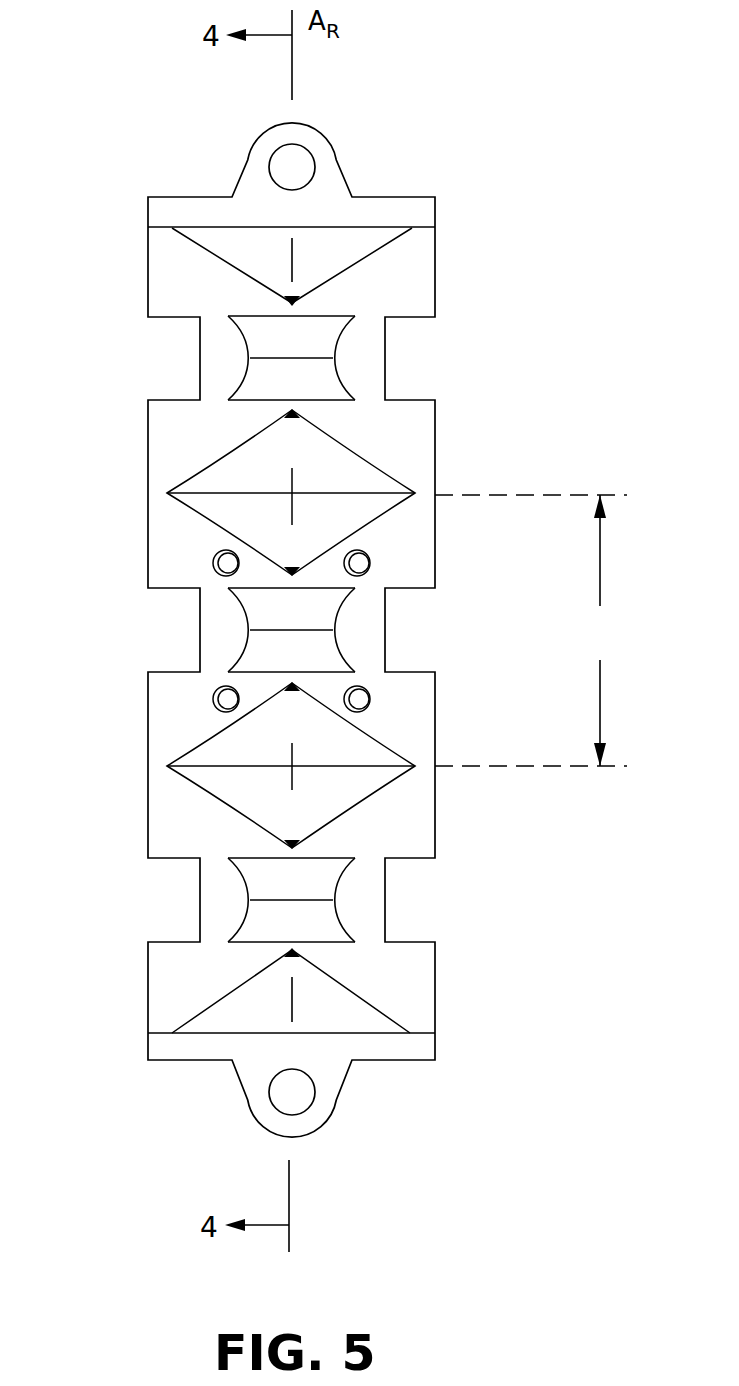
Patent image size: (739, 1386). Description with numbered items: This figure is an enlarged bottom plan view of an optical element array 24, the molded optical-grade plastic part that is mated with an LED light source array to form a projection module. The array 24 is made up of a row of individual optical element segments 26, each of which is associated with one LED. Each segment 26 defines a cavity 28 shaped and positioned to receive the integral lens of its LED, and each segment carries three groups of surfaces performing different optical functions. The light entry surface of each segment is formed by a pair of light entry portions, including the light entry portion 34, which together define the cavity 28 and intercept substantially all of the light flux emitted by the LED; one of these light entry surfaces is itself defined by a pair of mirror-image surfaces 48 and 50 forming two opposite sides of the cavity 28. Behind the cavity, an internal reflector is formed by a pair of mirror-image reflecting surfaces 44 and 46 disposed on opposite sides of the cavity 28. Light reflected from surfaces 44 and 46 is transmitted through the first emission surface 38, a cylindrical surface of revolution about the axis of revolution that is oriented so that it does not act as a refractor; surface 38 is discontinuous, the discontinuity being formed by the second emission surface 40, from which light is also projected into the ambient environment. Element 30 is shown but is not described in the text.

The optical element array 24 is at (134, 172).
The optical element 26 is at (531, 630).
The cavity 28 is at (252, 877).
The frame body 30 is at (203, 839).
The light entry portion 34 is at (347, 603).
The first emission surface 38 is at (435, 281).
The second emission surface 40 is at (385, 357).
The internal reflecting surface 44 is at (238, 262).
The internal reflecting surface 46 is at (210, 468).
The light entry surface 48 is at (272, 592).
The light entry surface 50 is at (275, 672).